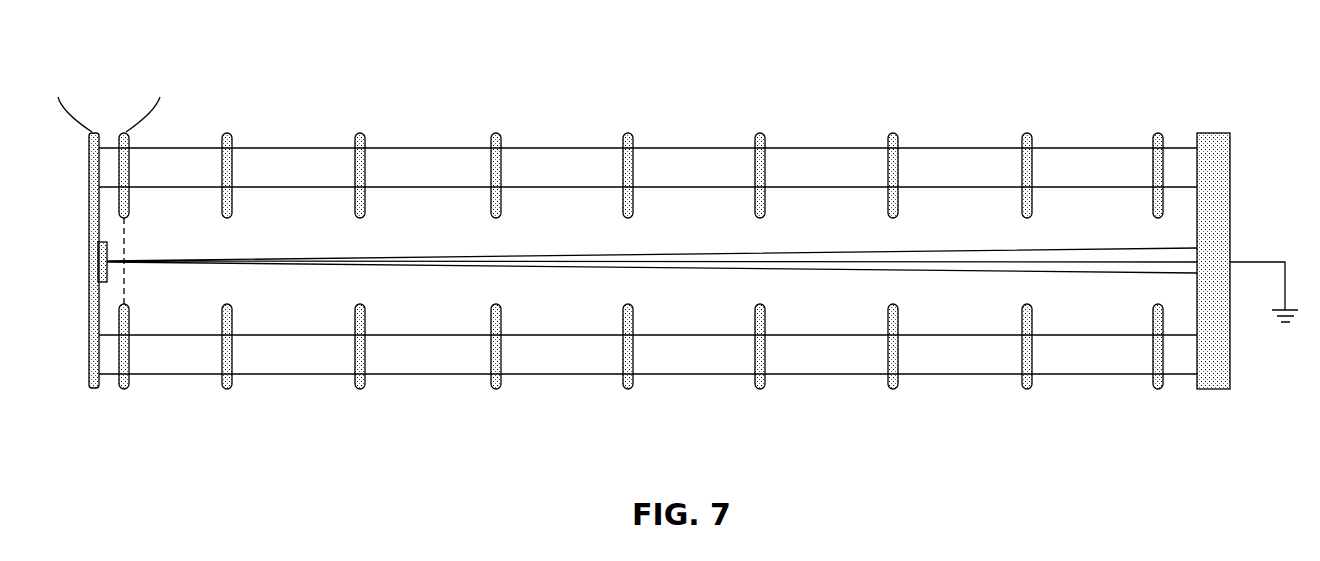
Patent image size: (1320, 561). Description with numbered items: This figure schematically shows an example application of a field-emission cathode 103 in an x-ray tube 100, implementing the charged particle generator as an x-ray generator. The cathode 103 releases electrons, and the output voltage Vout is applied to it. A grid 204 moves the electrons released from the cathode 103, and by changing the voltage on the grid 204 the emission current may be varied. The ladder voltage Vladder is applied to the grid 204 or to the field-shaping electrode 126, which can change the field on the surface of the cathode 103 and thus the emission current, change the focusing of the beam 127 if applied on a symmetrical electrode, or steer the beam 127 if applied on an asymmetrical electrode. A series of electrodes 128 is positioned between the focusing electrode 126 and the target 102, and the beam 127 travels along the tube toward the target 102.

The x-ray tube 100 is at (1135, 44).
The target 102 is at (1222, 390).
The cathode 103 is at (98, 262).
The field-shaping electrode 126 is at (124, 390).
The beam 127 is at (537, 268).
The series of electrodes 128 is at (362, 133).
The grid 204 is at (131, 276).